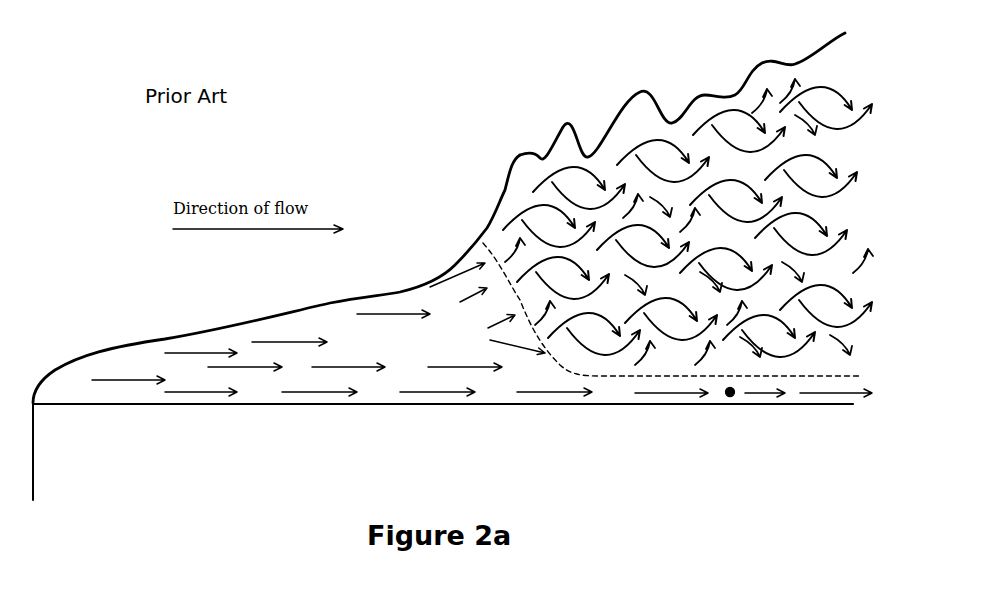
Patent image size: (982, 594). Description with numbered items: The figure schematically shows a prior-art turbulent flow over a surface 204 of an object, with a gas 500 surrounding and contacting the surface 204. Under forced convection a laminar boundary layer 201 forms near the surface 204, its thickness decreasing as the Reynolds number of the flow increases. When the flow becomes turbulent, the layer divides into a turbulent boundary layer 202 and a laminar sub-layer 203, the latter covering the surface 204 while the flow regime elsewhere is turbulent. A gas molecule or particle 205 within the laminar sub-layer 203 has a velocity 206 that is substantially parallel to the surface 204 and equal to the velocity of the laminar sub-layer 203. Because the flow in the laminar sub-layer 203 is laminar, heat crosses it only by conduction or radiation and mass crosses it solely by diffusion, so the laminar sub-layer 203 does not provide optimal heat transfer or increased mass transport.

The laminar boundary layer 201 is at (207, 333).
The turbulent boundary layer 202 is at (588, 186).
The laminar sub-layer 203 is at (645, 392).
The surface 204 is at (212, 404).
The particle 205 is at (725, 397).
The velocity 206 is at (768, 392).
The gas 500 is at (477, 155).